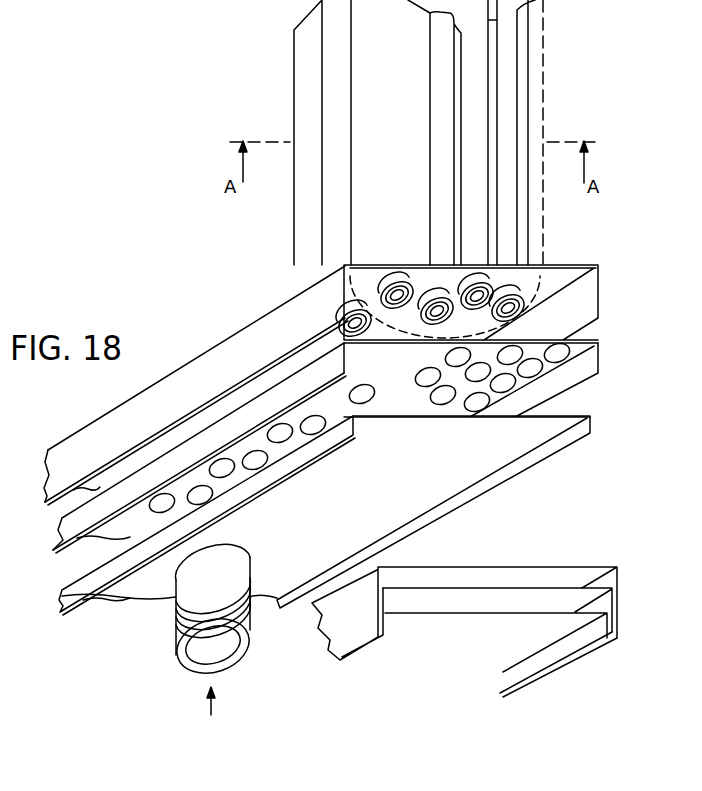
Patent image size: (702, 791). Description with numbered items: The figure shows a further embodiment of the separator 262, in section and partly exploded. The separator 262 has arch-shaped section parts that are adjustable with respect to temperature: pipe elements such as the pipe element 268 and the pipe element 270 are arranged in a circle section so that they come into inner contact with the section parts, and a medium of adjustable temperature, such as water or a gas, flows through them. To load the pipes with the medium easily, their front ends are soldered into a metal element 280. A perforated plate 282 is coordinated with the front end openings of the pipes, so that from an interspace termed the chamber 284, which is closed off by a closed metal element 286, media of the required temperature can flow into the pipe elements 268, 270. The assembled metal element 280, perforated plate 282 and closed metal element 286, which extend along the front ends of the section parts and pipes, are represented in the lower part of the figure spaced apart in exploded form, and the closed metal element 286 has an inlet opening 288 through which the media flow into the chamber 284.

The separator 262 is at (231, 250).
The pipe element 268 is at (450, 148).
The pipe element 270 is at (510, 76).
The metal element 280 is at (568, 265).
The perforated plate 282 is at (341, 327).
The chamber 284 is at (525, 600).
The closed metal element 286 is at (478, 453).
The inlet opening 288 is at (240, 653).